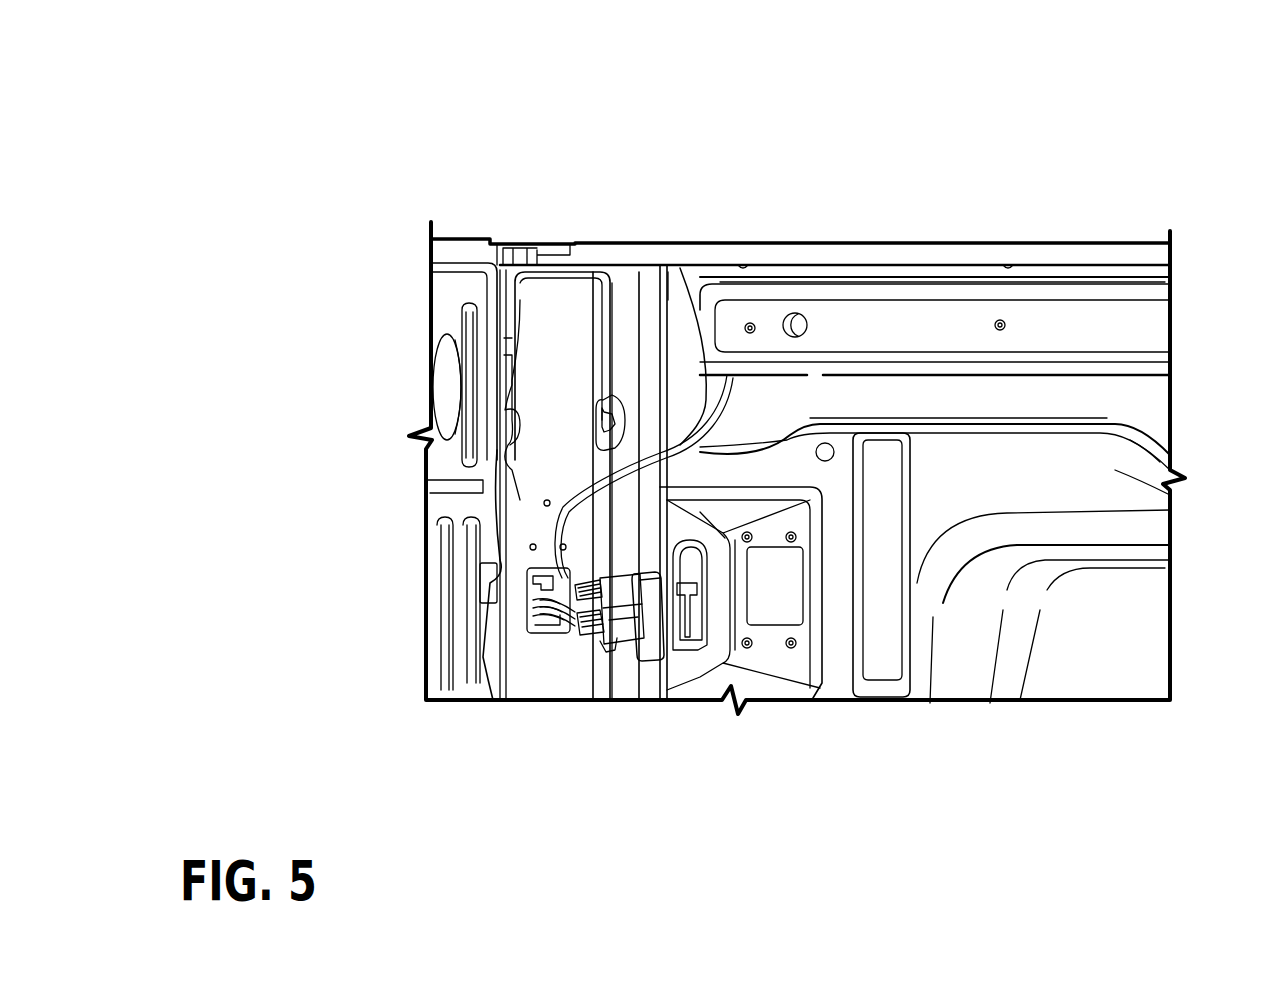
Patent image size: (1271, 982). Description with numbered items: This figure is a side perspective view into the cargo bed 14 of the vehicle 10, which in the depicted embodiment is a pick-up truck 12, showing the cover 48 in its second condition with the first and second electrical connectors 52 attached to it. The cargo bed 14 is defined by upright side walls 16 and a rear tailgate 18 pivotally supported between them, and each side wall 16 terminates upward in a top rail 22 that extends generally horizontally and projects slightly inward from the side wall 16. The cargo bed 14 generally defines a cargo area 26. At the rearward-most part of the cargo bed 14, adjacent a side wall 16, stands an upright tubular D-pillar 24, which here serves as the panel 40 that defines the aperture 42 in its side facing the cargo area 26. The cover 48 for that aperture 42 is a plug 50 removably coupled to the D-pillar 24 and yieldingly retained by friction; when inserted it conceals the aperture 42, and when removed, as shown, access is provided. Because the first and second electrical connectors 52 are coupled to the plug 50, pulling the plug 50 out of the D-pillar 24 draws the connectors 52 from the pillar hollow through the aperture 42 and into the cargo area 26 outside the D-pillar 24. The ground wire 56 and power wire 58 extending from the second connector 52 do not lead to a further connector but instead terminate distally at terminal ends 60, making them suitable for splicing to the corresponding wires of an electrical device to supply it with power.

The vehicle 10 is at (1010, 102).
The pick-up truck 12 is at (1053, 129).
The cargo bed 14 is at (1036, 404).
The side walls 16 is at (905, 358).
The tailgate 18 is at (445, 300).
The top rail 22 is at (763, 241).
The D-pillar 24 is at (578, 313).
The cargo area 26 is at (1078, 515).
The panel 40 is at (540, 480).
The aperture 42 is at (528, 591).
The cover 48 is at (650, 665).
The plug 50 is at (641, 634).
The electrical connector 52 is at (607, 623).
The ground wire 56 is at (560, 510).
The power wire 58 is at (550, 538).
The terminal ends 60 is at (670, 300).